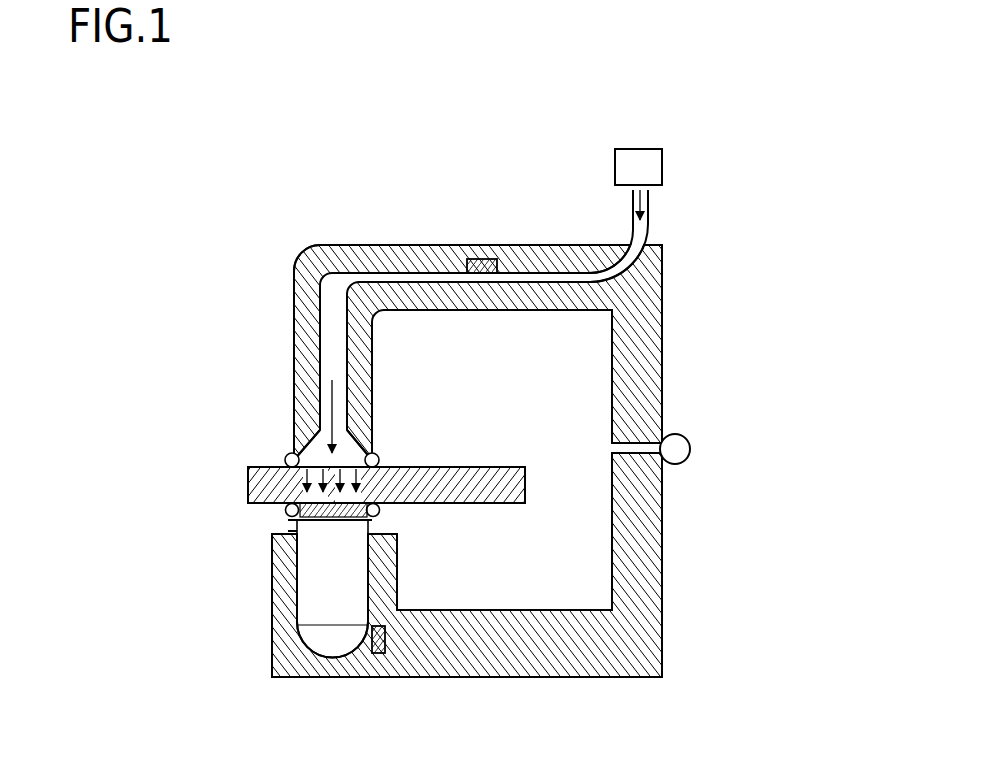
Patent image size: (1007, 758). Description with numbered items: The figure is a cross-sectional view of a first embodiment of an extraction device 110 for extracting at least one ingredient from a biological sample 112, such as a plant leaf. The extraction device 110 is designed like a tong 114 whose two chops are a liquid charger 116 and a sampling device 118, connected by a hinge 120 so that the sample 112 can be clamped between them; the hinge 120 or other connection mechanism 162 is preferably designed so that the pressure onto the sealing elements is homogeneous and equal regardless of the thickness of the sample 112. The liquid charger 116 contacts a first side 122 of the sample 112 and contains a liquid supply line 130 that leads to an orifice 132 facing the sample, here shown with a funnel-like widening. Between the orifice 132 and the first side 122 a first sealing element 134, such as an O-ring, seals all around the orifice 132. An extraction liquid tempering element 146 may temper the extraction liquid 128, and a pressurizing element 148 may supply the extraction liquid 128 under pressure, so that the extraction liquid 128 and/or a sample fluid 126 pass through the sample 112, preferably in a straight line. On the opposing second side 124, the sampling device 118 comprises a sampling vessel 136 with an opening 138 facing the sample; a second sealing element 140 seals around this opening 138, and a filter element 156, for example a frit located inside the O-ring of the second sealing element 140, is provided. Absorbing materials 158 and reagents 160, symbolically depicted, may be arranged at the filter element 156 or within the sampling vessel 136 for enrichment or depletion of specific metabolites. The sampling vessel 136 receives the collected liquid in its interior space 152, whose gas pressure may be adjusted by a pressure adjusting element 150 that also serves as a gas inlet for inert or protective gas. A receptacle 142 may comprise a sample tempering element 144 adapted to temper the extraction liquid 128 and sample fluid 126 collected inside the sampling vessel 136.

The extraction device 110 is at (294, 224).
The tong 114 is at (419, 436).
The liquid charger 116 is at (295, 295).
The liquid supply line 130 is at (295, 268).
The sampling device 118 is at (273, 620).
The sampling vessel 136 is at (280, 585).
The orifice 132 is at (291, 452).
The first sealing element 134 is at (291, 455).
The biological sample 112 is at (250, 482).
The first side 122 is at (468, 465).
The second side 124 is at (498, 505).
The sample fluid 126 is at (258, 466).
The extraction liquid 128 is at (334, 393).
The second sealing element 140 is at (287, 510).
The filter element 156 is at (380, 512).
The opening 138 is at (322, 522).
The absorbing material 158 is at (372, 520).
The reagent 160 is at (332, 639).
The pressure adjusting element 150 is at (287, 532).
The interior space 152 is at (350, 582).
The receptacle 142 is at (347, 660).
The sample tempering element 144 is at (385, 638).
The extraction liquid tempering element 146 is at (482, 259).
The pressurizing element 148 is at (663, 169).
The hinge 120 is at (680, 436).
The connection mechanism 162 is at (675, 449).